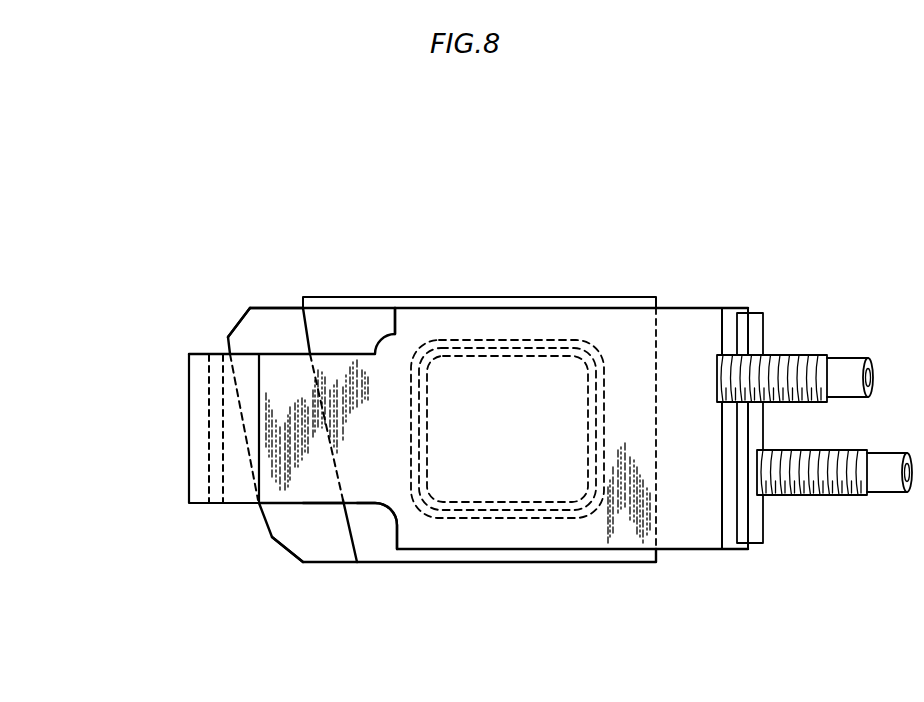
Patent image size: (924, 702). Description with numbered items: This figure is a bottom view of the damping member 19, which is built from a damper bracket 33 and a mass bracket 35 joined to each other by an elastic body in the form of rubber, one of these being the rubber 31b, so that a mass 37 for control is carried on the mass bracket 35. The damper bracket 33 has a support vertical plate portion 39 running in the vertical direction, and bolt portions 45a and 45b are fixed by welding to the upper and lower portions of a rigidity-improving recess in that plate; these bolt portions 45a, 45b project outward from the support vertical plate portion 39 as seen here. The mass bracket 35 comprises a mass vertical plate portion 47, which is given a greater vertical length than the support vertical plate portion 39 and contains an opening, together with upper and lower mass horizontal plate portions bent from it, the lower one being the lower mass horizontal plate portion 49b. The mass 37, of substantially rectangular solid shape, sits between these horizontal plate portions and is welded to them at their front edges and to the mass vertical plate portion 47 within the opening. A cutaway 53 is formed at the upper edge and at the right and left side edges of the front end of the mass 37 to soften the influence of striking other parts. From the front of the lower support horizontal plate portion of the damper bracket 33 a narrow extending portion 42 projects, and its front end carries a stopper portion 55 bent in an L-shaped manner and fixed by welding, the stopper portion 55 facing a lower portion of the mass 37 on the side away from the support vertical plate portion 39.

The damping member 19 is at (545, 255).
The rubber 31b is at (533, 485).
The damper bracket 33 is at (688, 305).
The mass bracket 35 is at (572, 295).
The mass 37 is at (272, 312).
The support vertical plate portion 39 is at (745, 335).
The extending portion 42 is at (317, 503).
The bolt portion 45a is at (797, 360).
The bolt portion 45b is at (827, 473).
The mass vertical plate portion 47 is at (430, 297).
The lower mass horizontal plate portion 49b is at (370, 518).
The cutaway 53 is at (225, 327).
The stopper portion 55 is at (193, 422).